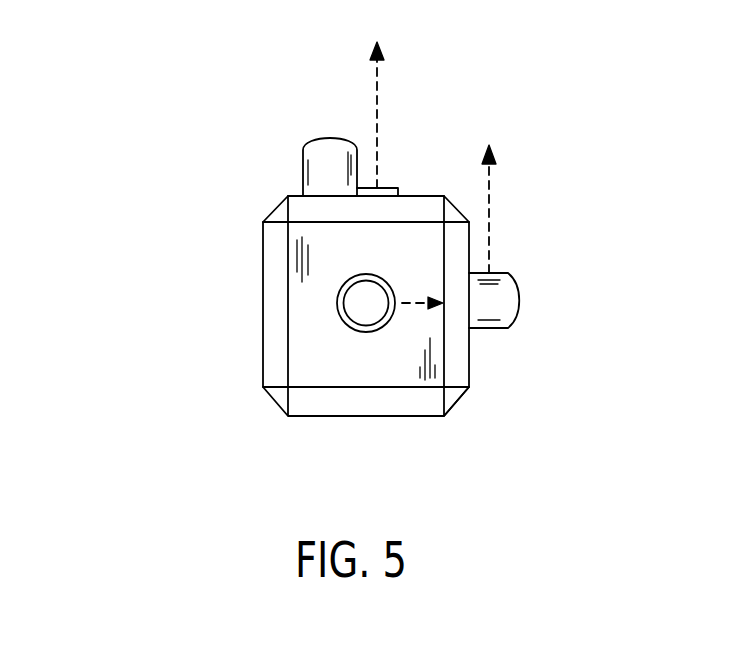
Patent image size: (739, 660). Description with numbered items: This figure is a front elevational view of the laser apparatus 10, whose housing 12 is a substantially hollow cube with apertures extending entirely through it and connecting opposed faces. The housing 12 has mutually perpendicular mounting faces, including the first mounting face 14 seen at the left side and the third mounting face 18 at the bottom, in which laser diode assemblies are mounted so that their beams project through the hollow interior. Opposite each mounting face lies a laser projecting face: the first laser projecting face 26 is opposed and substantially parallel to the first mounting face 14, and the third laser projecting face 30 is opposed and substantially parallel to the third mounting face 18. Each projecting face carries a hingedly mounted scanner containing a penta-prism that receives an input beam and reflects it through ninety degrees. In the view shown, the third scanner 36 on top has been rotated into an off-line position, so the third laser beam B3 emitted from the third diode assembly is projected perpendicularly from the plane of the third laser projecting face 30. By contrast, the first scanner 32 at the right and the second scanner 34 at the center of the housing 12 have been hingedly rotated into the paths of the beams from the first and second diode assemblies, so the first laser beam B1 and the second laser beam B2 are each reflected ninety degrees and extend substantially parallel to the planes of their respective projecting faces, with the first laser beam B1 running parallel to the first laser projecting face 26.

The laser apparatus 10 is at (183, 316).
The housing 12 is at (263, 367).
The first mounting face 14 is at (263, 272).
The third mounting face 18 is at (365, 417).
The first laser projecting face 26 is at (471, 372).
The third laser projecting face 30 is at (419, 195).
The first scanner 32 is at (510, 323).
The second scanner 34 is at (346, 284).
The third scanner 36 is at (302, 172).
The first laser beam B1 is at (490, 208).
The second laser beam B2 is at (408, 310).
The third laser beam B3 is at (378, 90).